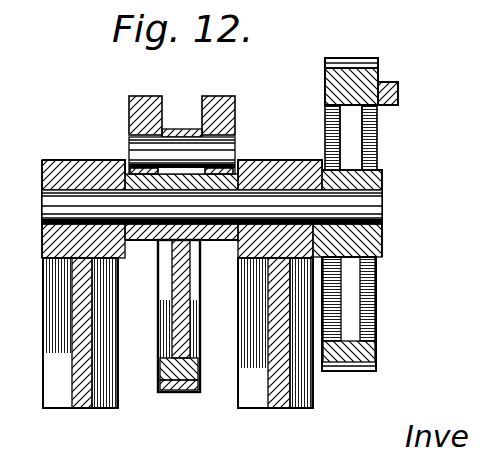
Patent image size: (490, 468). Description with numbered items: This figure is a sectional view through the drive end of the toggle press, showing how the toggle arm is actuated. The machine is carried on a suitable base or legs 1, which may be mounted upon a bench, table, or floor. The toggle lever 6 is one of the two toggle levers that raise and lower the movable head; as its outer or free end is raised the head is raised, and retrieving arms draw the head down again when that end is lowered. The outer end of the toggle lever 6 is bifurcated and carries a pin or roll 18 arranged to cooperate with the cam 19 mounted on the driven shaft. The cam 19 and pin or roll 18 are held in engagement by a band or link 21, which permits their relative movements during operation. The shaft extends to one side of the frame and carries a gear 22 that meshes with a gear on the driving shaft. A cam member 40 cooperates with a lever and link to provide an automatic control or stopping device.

The base or legs 1 is at (72, 165).
The toggle lever 6 is at (149, 97).
The pin or roll 18 is at (220, 155).
The cam 19 is at (200, 368).
The band or link 21 is at (177, 127).
The gear 22 is at (368, 352).
The cam member 40 is at (400, 100).